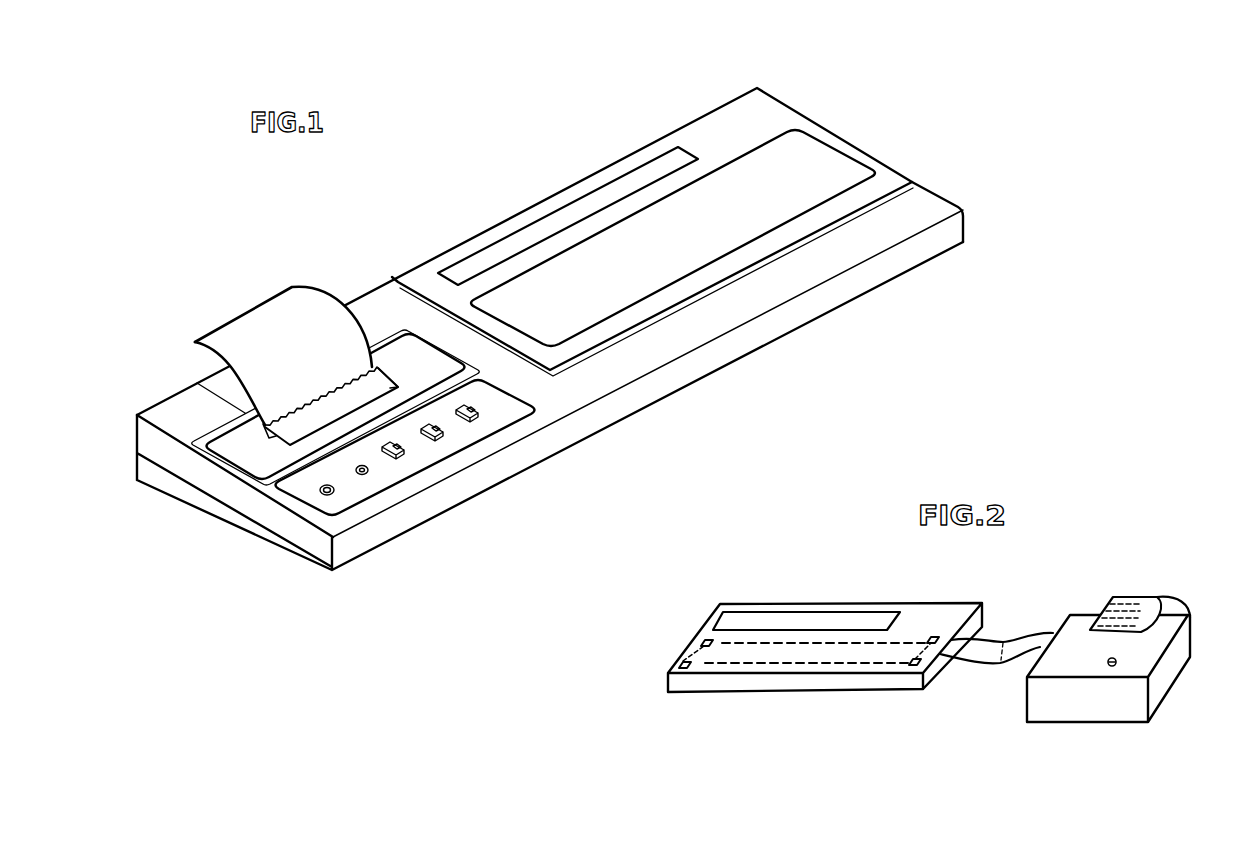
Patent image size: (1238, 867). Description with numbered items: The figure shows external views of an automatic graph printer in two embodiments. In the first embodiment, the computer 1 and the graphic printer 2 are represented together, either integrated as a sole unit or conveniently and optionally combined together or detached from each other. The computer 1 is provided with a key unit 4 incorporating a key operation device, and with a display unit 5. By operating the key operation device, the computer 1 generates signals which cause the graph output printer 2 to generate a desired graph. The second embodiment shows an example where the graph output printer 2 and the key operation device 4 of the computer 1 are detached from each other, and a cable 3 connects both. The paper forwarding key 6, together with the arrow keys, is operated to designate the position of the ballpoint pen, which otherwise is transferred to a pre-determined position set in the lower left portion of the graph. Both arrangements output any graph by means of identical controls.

In FIG. 1, the computer 1 is at (730, 122).
In FIG. 2, the computer 1 is at (933, 602).
In FIG. 1, the graphic printer 2 is at (393, 362).
In FIG. 2, the graphic printer 2 is at (1187, 643).
In FIG. 2, the cable 3 is at (1028, 632).
In FIG. 1, the key unit 4 is at (802, 162).
In FIG. 2, the key unit 4 is at (735, 660).
In FIG. 1, the display unit 5 is at (558, 218).
In FIG. 2, the display unit 5 is at (807, 622).
In FIG. 1, the paper forwarding key 6 is at (368, 470).
In FIG. 2, the paper forwarding key 6 is at (1108, 668).